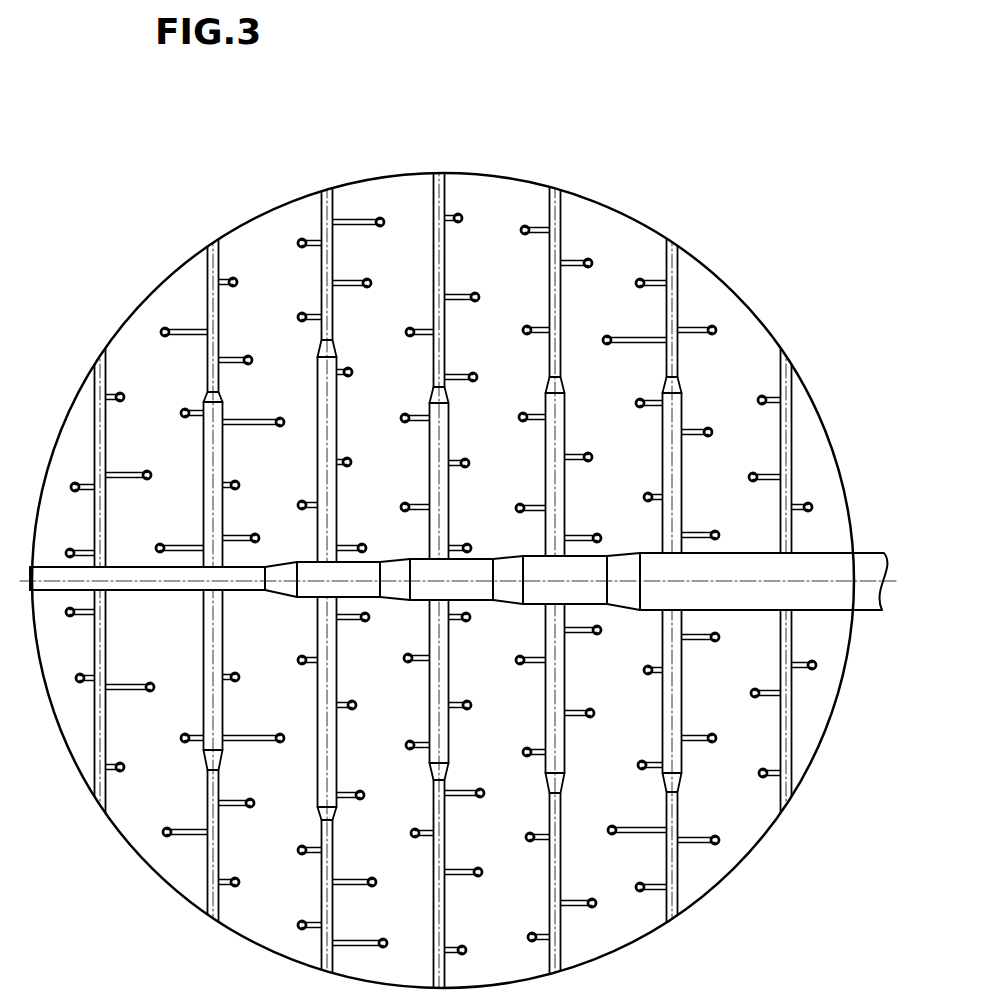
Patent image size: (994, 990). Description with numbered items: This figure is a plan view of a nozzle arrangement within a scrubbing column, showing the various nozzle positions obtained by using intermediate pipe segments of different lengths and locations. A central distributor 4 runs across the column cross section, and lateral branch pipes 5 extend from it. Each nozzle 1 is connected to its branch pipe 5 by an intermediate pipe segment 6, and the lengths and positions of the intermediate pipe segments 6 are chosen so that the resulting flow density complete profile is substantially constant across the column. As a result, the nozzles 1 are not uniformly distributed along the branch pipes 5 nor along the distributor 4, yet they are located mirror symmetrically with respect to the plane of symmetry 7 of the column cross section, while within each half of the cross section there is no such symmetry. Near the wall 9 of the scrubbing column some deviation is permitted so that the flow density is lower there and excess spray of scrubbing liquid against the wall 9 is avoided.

The nozzle 1 is at (527, 228).
The distributor 4 is at (729, 597).
The branch pipe 5 is at (661, 262).
The intermediate pipe segment 6 is at (455, 215).
The plane of symmetry 7 is at (188, 578).
The wall 9 is at (155, 286).